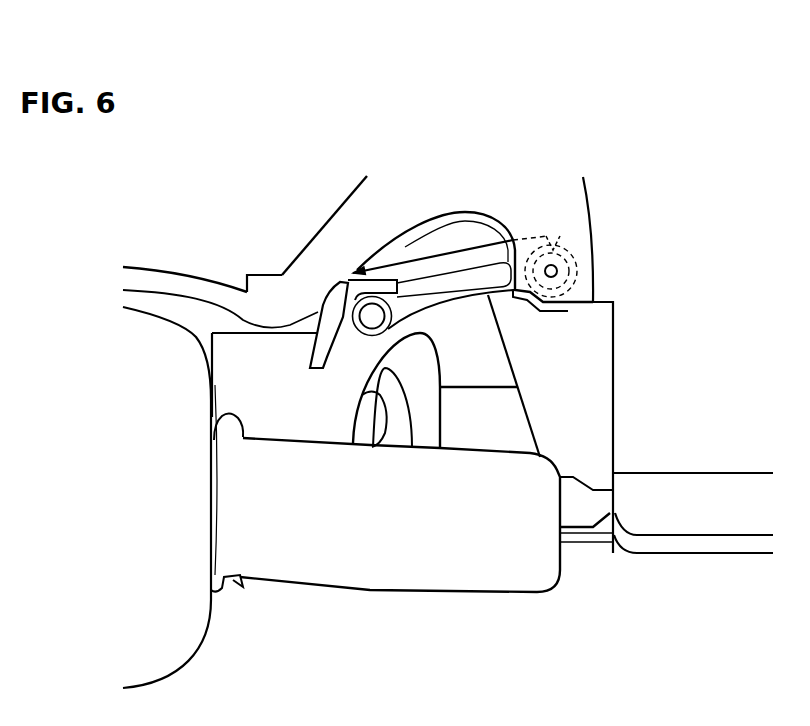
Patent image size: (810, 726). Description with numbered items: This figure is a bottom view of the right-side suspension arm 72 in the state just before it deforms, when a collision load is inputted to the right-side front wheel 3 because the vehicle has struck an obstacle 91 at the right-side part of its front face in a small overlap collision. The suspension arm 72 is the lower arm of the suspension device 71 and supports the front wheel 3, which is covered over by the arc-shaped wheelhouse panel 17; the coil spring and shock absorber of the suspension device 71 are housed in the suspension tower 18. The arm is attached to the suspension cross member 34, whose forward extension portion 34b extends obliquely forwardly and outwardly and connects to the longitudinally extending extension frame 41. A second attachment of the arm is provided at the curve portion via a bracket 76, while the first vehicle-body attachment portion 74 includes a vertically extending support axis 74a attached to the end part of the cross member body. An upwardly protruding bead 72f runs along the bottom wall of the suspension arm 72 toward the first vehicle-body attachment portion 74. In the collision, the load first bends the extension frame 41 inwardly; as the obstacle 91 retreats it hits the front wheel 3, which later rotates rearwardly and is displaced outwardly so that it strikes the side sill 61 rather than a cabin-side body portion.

The front wheel 3 is at (300, 567).
The wheelhouse panel 17 is at (242, 352).
The suspension tower 18 is at (423, 427).
The suspension cross member 34 is at (543, 197).
The forward extension portion 34b is at (313, 250).
The extension frame 41 is at (158, 280).
The side sill 61 is at (678, 497).
The suspension device 71 is at (428, 398).
The suspension arm 72 is at (423, 262).
The bead 72f is at (468, 270).
The first vehicle-body attachment portion 74 is at (553, 240).
The support axis 74a is at (552, 273).
The bracket 76 is at (340, 300).
The obstacle 91 is at (147, 443).